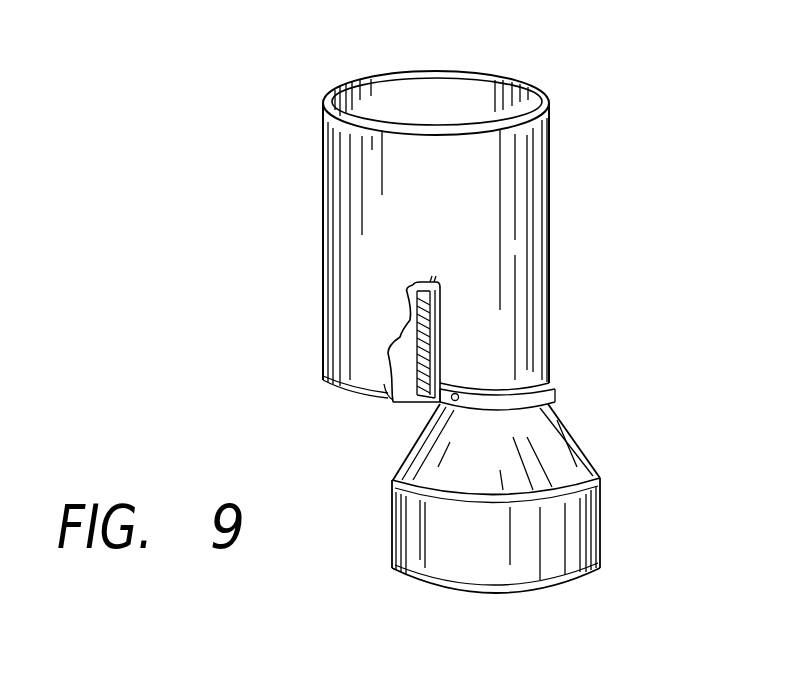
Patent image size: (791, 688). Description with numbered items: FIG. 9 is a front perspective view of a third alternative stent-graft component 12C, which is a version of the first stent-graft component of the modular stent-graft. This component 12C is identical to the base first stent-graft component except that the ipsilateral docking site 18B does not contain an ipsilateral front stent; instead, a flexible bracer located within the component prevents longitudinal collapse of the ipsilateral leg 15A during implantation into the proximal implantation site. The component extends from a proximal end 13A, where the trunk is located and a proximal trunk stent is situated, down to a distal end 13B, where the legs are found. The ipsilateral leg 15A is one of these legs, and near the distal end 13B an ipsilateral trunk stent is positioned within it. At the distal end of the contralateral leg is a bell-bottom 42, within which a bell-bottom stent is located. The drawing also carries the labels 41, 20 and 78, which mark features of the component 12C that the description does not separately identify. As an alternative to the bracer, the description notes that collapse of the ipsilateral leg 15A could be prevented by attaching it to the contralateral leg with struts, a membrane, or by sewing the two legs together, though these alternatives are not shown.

The proximal end 13A is at (510, 77).
The cylindrical side wall 41 is at (552, 172).
The third alternative stent-graft component 12C is at (572, 278).
The side wall 20 is at (535, 332).
The ipsilateral docking site 18B is at (407, 333).
The ipsilateral leg 15A is at (362, 298).
The distal end 13B is at (330, 398).
The torn edge 78 is at (408, 402).
The bell-bottom 42 is at (410, 522).